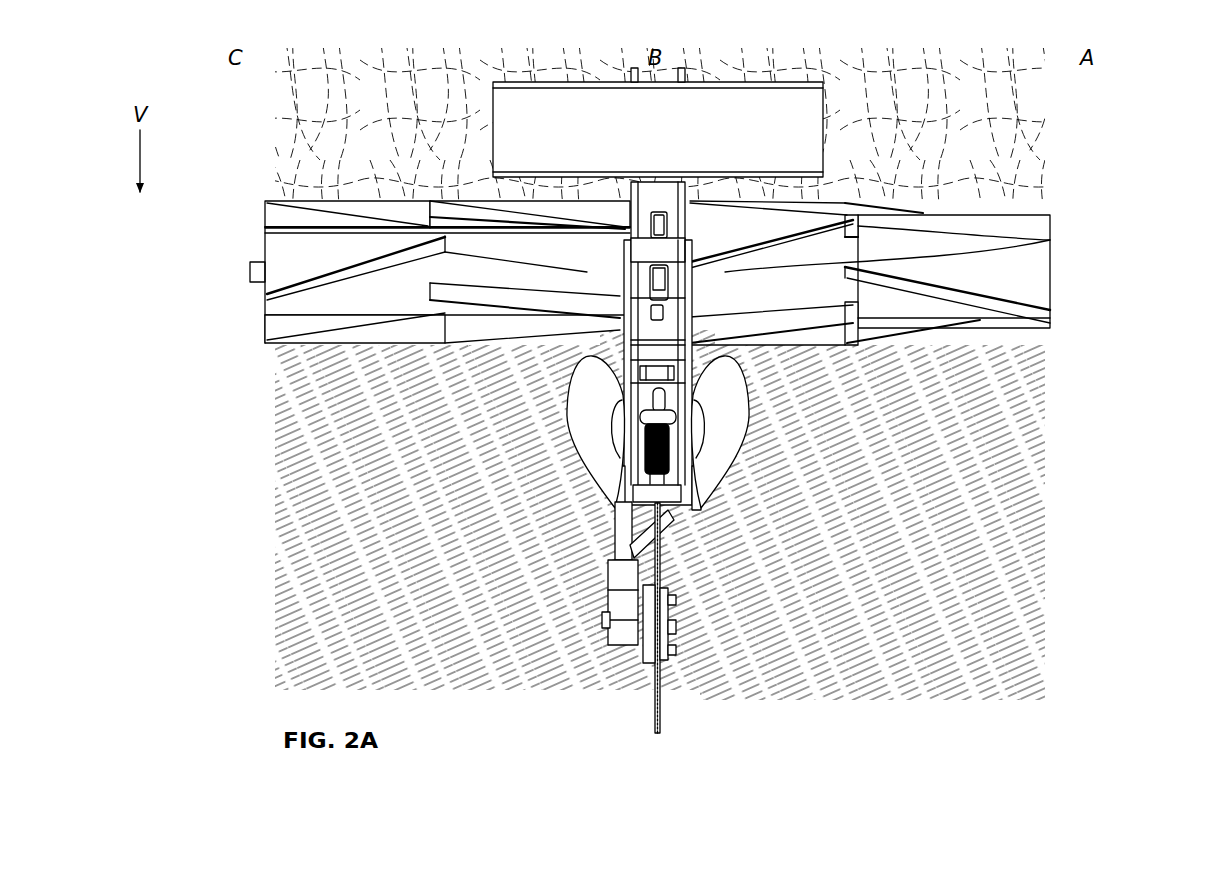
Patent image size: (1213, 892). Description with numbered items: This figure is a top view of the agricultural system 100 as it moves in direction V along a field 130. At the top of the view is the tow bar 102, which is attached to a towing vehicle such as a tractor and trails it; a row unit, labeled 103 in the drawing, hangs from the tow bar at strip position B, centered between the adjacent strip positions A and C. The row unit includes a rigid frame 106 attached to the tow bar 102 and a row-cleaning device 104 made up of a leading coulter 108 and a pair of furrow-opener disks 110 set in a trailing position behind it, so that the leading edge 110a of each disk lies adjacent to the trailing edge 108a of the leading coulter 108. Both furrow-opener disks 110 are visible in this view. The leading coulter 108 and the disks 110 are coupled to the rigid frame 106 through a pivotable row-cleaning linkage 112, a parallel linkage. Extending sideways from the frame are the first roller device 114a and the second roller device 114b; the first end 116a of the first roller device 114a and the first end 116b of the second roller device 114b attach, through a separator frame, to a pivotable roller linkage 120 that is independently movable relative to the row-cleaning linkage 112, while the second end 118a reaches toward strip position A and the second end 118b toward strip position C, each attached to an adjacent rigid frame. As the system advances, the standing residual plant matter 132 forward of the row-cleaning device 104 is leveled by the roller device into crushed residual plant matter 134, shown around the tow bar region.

The agricultural system 100 is at (1102, 72).
The tow bar 102 is at (808, 115).
The frame 103 is at (625, 208).
The row-cleaning device 104 is at (598, 618).
The rigid frame 106 is at (622, 268).
The leading coulter 108 is at (665, 723).
The trailing edge 108a is at (658, 510).
The furrow-opener disks 110 is at (572, 450).
The leading edge 110a is at (612, 500).
The pivotable row-cleaning linkage 112 is at (695, 497).
The first roller device 114a is at (918, 274).
The second roller device 114b is at (417, 282).
The first end 116a is at (1049, 240).
The first end 116b is at (445, 237).
The second end 118a is at (1037, 290).
The second end 118b is at (278, 311).
The pivotable roller linkage 120 is at (700, 290).
The field 130 is at (380, 575).
The standing residual plant matter 132 is at (443, 502).
The crushed residual plant matter 134 is at (390, 148).